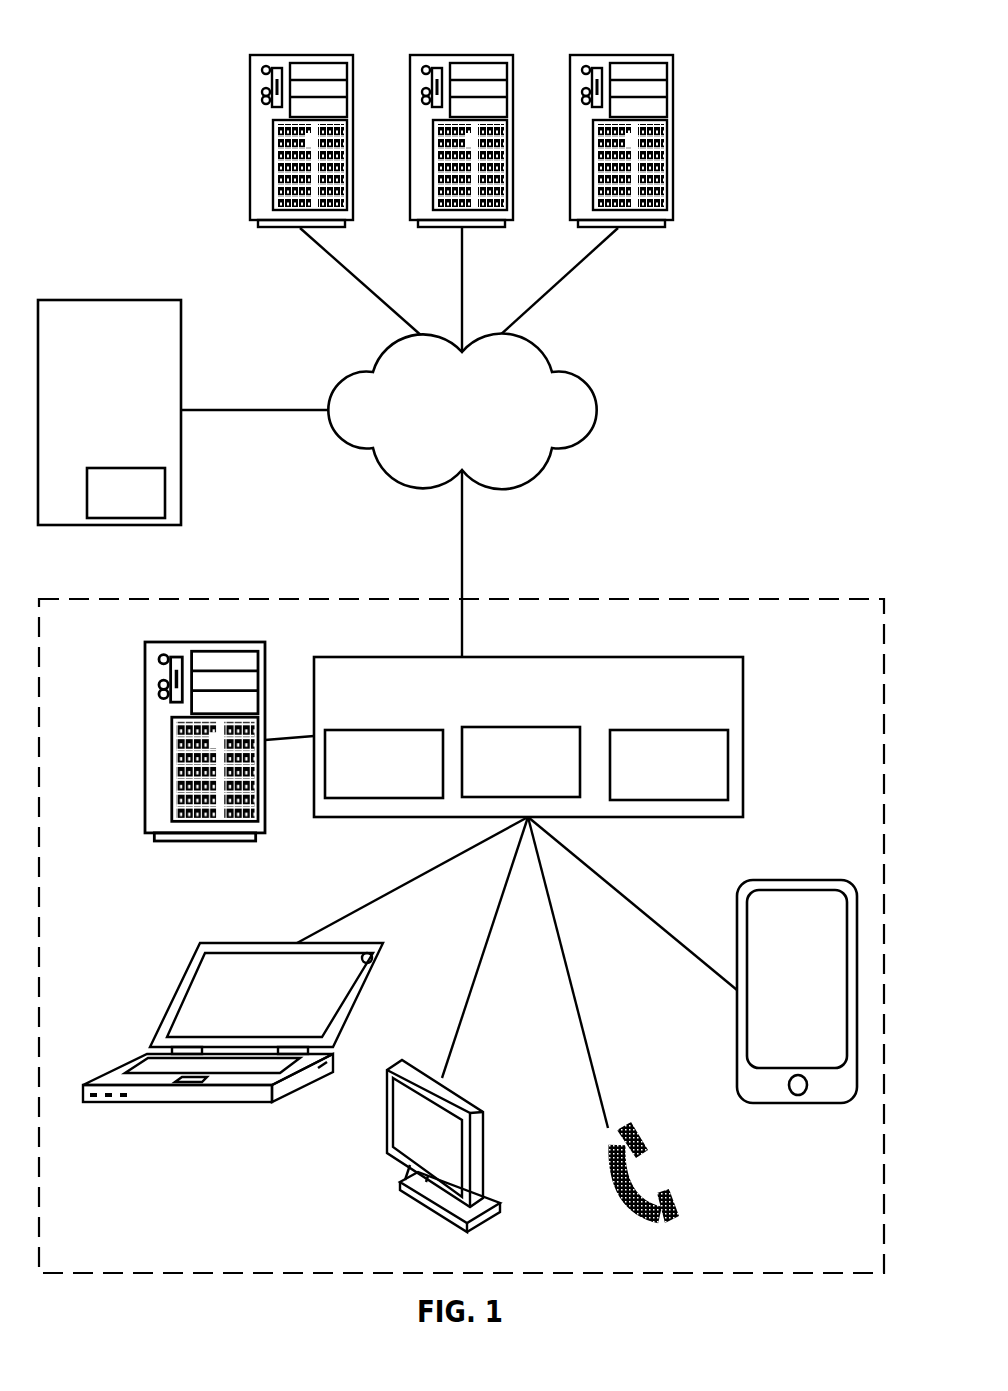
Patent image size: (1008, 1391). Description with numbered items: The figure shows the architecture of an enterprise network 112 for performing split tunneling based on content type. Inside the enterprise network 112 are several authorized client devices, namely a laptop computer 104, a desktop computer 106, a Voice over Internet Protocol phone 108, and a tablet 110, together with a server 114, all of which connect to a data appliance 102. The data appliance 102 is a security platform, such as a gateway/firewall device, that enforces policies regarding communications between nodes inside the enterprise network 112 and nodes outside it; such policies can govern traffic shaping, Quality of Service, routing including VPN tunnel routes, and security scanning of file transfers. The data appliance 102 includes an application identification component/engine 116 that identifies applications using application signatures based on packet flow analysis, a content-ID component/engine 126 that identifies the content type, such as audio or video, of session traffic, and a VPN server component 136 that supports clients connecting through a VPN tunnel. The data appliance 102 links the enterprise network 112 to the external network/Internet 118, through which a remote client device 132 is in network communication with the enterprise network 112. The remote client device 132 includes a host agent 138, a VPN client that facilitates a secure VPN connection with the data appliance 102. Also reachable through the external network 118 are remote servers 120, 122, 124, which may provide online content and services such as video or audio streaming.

The data appliance 102 is at (490, 657).
The client device (laptop computer) 104 is at (180, 973).
The client device (desktop computer) 106 is at (460, 1093).
The client device (VOIP phone) 108 is at (642, 1135).
The client device (tablet) 110 is at (798, 880).
The enterprise network 112 is at (647, 599).
The server 114 is at (257, 672).
The application identification component/engine (APP-ID) 116 is at (580, 762).
The external network/Internet 118 is at (553, 372).
The remote server 120 is at (303, 55).
The remote server 122 is at (463, 55).
The remote server 124 is at (623, 55).
The content-ID component/engine 126 is at (325, 767).
The remote client device(s) 132 is at (108, 300).
The VPN server component 136 is at (728, 767).
The host agent (HA) 138 is at (165, 493).